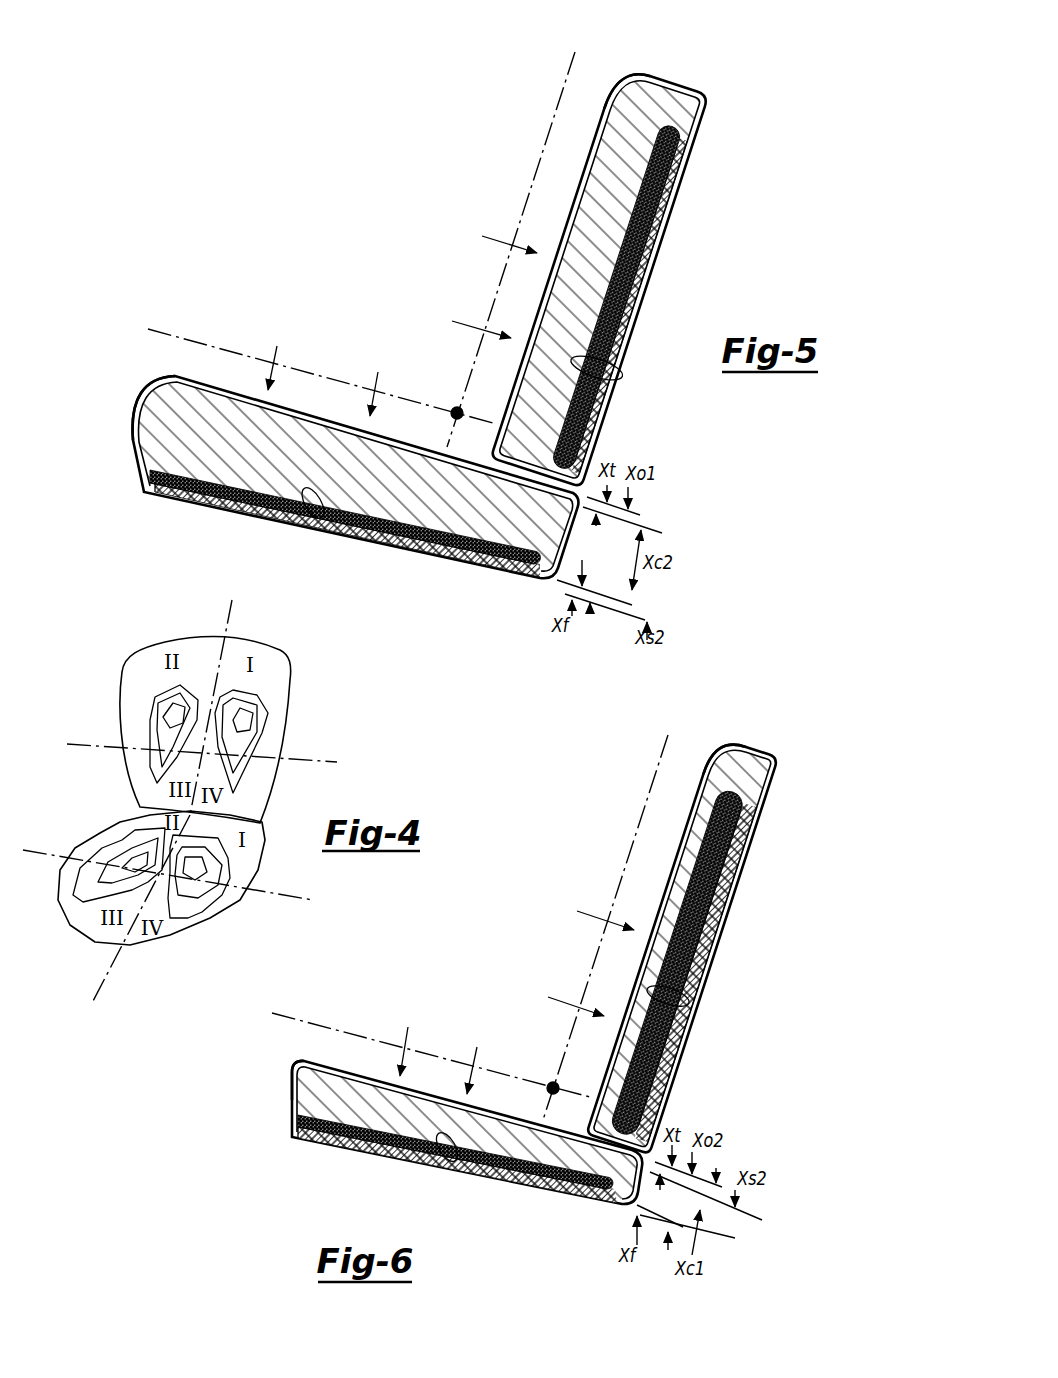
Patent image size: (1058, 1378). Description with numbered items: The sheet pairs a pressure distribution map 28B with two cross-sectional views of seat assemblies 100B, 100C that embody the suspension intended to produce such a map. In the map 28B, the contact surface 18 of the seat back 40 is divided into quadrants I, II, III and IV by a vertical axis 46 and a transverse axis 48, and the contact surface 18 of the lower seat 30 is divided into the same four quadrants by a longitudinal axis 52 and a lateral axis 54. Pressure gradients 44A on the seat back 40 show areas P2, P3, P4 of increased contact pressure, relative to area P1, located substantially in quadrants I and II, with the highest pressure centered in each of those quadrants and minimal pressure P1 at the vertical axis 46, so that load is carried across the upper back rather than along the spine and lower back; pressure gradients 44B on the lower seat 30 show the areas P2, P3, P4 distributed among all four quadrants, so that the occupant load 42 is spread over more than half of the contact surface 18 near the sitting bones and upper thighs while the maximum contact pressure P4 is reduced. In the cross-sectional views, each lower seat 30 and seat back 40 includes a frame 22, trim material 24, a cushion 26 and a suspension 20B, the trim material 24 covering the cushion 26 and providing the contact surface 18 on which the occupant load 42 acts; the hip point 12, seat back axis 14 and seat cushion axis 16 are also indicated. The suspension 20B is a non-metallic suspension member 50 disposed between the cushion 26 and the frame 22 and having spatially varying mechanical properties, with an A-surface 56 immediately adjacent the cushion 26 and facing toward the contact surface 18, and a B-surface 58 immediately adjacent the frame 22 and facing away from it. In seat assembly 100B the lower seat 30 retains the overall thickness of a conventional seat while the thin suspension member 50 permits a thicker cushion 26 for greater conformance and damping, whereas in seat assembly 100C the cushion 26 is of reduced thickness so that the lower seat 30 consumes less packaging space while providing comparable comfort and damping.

In FIG. 5, the hip point 12 is at (455, 408).
In FIG. 6, the hip point 12 is at (552, 1082).
In FIG. 5, the seat back axis 14 is at (555, 110).
In FIG. 6, the seat back axis 14 is at (640, 813).
In FIG. 5, the seat cushion axis 16 is at (190, 340).
In FIG. 6, the seat cushion axis 16 is at (321, 1026).
In FIG. 5, the contact surface 18 is at (565, 217).
In FIG. 4, the contact surface 18 is at (140, 660).
In FIG. 6, the contact surface 18 is at (655, 917).
In FIG. 5, the suspension 20B is at (653, 230).
In FIG. 6, the suspension 20B is at (737, 835).
In FIG. 5, the frame 22 is at (609, 400).
In FIG. 6, the frame 22 is at (705, 965).
In FIG. 5, the trim material 24 is at (691, 163).
In FIG. 6, the trim material 24 is at (713, 762).
In FIG. 5, the cushion 26 is at (633, 67).
In FIG. 6, the cushion 26 is at (740, 747).
In FIG. 4, the pressure distribution map 28B is at (205, 818).
In FIG. 6, the lower seat 30 is at (270, 1136).
In FIG. 5, the seat back 40 is at (724, 267).
In FIG. 6, the seat back 40 is at (798, 912).
In FIG. 5, the occupant load 42 is at (483, 238).
In FIG. 6, the occupant load 42 is at (577, 913).
In FIG. 4, the pressure gradients 44A is at (137, 708).
In FIG. 4, the pressure gradients 44B is at (100, 834).
In FIG. 4, the vertical axis 46 is at (230, 623).
In FIG. 4, the transverse axis 48 is at (95, 745).
In FIG. 5, the suspension member 50 is at (627, 305).
In FIG. 6, the suspension member 50 is at (713, 892).
In FIG. 4, the longitudinal axis 52 is at (108, 988).
In FIG. 4, the lateral axis 54 is at (32, 853).
In FIG. 5, the A-surface 56 is at (612, 372).
In FIG. 6, the A-surface 56 is at (672, 1003).
In FIG. 5, the B-surface 58 is at (618, 383).
In FIG. 6, the B-surface 58 is at (647, 1105).
In FIG. 5, the seat assembly 100B is at (415, 301).
In FIG. 6, the seat assembly 100C is at (529, 972).
In FIG. 4, the area P1 is at (258, 793).
In FIG. 4, the area P2 is at (267, 722).
In FIG. 4, the area P3 is at (253, 705).
In FIG. 4, the area P4 is at (240, 727).